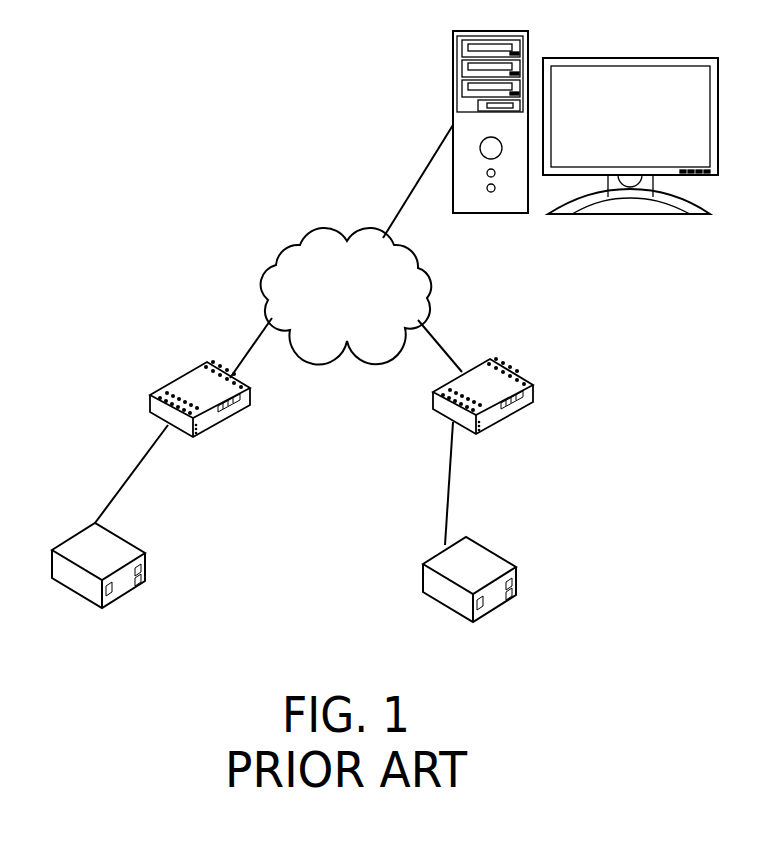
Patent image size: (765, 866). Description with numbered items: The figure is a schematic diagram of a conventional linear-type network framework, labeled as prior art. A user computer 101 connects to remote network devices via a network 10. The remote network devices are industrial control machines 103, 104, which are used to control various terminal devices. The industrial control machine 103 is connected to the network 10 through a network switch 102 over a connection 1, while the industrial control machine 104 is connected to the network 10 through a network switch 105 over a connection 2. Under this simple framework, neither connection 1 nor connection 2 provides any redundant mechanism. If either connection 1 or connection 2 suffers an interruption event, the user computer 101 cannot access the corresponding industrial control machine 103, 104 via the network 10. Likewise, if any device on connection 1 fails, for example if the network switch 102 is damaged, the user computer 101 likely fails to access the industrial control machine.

The user computer 101 is at (453, 64).
The network 10 is at (318, 237).
The connection 1 is at (245, 350).
The network switch 102 is at (178, 378).
The network switch 105 is at (515, 372).
The connection 2 is at (453, 467).
The industrial control machine 103 is at (83, 542).
The industrial control machine 104 is at (490, 560).